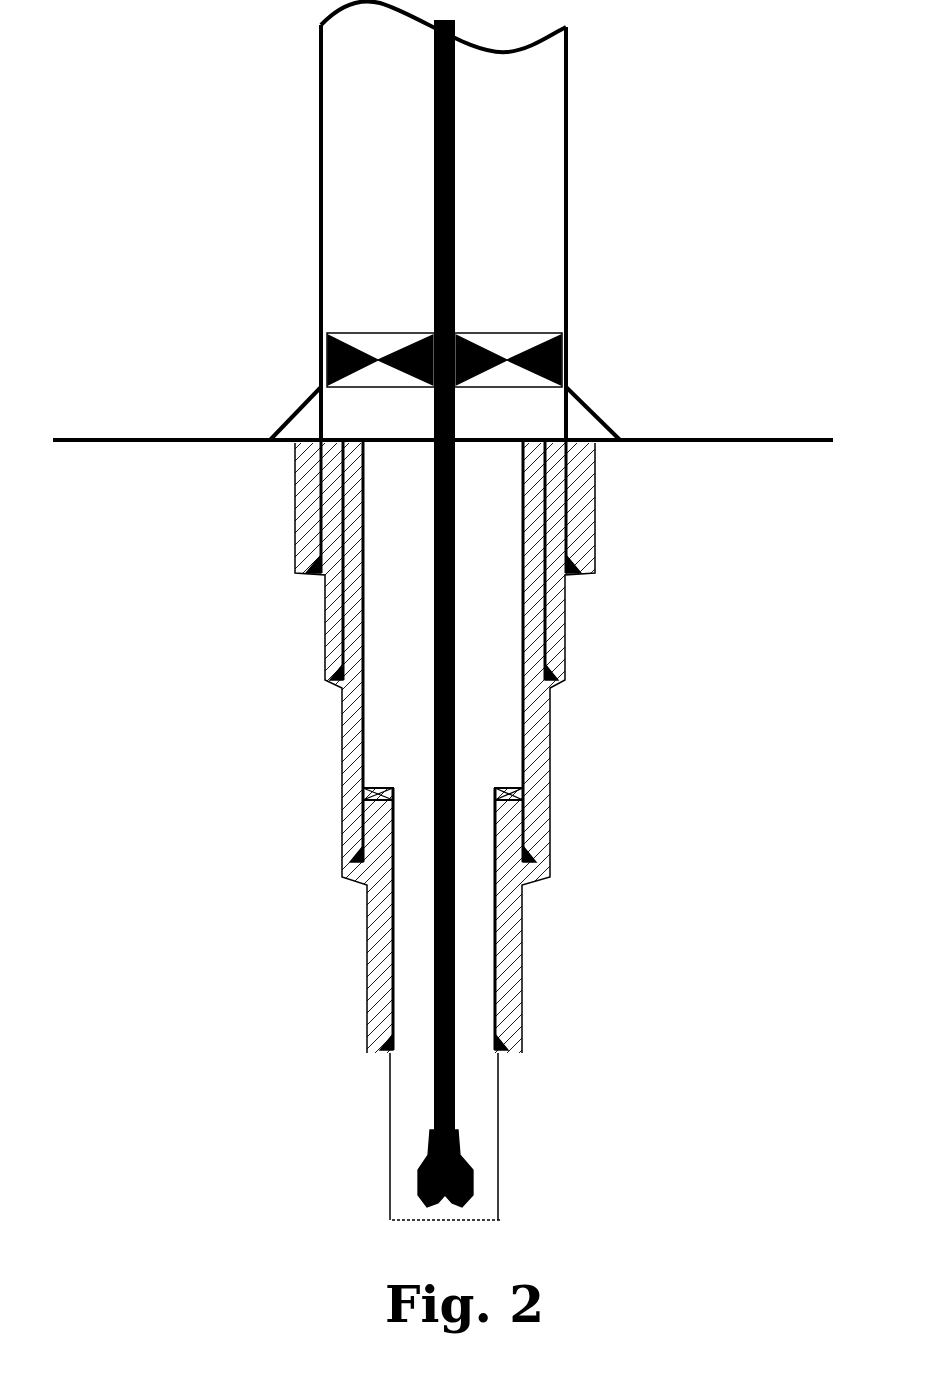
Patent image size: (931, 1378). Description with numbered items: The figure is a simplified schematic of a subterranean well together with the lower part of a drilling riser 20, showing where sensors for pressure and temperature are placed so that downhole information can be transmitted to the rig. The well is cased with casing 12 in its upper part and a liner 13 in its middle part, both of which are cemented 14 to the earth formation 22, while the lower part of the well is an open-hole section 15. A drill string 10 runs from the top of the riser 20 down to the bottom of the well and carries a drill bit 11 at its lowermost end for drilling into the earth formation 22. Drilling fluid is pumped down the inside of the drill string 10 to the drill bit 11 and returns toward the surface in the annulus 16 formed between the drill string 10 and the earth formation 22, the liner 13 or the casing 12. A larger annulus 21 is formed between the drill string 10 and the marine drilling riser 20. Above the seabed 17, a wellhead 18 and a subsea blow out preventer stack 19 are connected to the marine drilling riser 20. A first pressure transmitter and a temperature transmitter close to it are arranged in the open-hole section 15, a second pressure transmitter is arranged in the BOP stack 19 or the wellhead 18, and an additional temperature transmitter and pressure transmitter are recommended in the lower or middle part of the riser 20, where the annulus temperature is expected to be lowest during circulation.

The drill string 10 is at (457, 727).
The drill bit 11 is at (415, 1200).
The casing 12 is at (527, 718).
The liner 13 is at (498, 970).
The cement 14 is at (535, 831).
The open-hole section 15 is at (390, 1125).
The annulus 16 is at (400, 940).
The seabed 17 is at (760, 440).
The wellhead 18 is at (593, 405).
The blow out preventer stack 19 is at (567, 360).
The drilling riser 20 is at (567, 150).
The larger annulus 21 is at (365, 210).
The earth formation 22 is at (446, 1236).